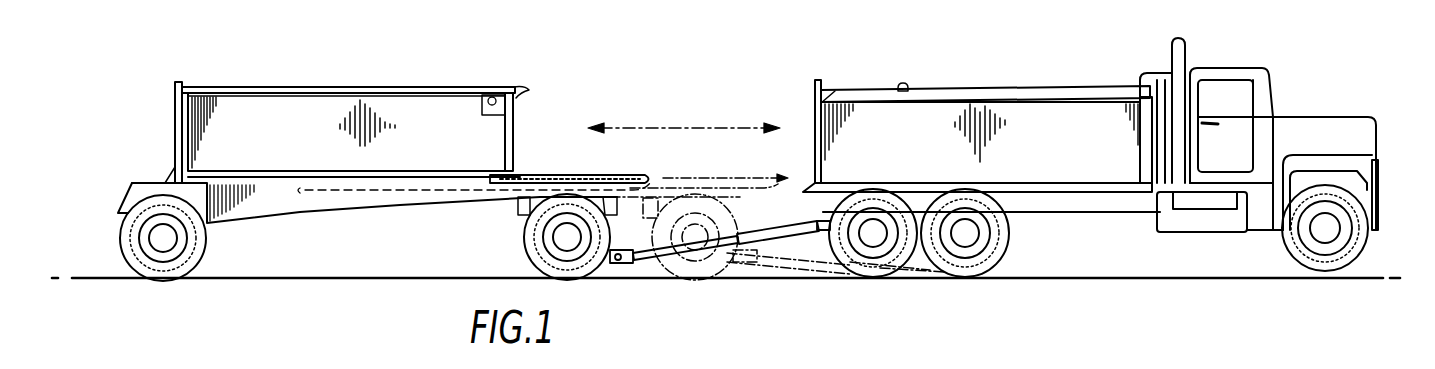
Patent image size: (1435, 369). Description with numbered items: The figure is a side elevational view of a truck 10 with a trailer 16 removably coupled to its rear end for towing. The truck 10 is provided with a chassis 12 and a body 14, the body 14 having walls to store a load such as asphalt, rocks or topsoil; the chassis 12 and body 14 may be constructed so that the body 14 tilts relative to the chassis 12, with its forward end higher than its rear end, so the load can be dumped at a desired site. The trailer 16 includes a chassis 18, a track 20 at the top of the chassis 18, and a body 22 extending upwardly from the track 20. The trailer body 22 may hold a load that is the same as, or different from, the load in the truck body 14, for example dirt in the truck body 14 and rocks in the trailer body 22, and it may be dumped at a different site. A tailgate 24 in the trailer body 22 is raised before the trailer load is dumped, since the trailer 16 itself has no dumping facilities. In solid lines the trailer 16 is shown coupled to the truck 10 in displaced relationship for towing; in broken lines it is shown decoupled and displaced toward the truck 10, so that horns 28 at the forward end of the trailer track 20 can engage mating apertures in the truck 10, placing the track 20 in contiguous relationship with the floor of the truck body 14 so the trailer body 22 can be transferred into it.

The truck 10 is at (1302, 102).
The chassis 12 is at (1093, 205).
The body 14 is at (1000, 112).
The trailer 16 is at (545, 108).
The chassis 18 is at (308, 203).
The track 20 is at (545, 177).
The body 22 is at (377, 108).
The tailgate 24 is at (178, 150).
The horns 28 is at (660, 180).